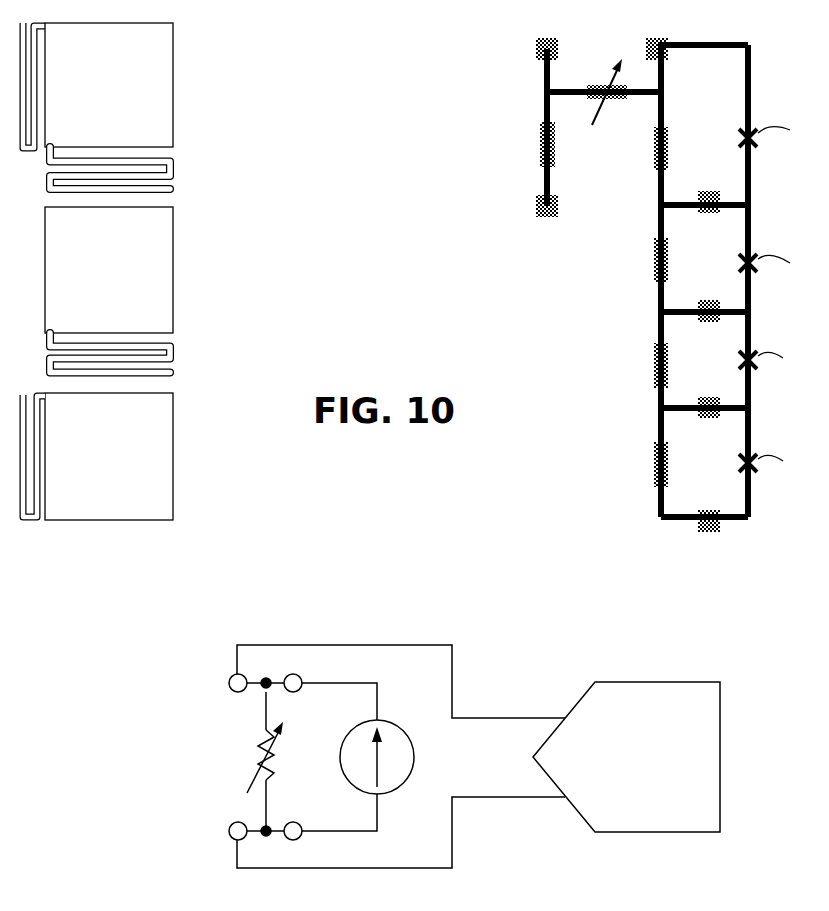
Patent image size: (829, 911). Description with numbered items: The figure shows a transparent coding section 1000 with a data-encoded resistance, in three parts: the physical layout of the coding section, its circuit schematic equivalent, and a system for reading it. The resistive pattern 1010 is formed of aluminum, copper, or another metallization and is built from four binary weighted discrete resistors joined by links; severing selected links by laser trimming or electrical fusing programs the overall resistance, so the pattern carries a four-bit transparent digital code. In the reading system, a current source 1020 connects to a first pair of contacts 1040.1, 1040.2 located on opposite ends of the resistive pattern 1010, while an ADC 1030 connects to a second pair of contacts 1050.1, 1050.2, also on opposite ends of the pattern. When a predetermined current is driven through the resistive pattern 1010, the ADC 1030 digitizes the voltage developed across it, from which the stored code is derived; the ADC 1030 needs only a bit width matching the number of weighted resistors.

The transparent coding section 1000 is at (413, 455).
The resistive pattern 1010 is at (190, 74).
The current source 1020 is at (415, 757).
The ADC 1030 is at (626, 757).
The contact 1040.1 is at (293, 841).
The contact 1040.2 is at (293, 673).
The contact 1050.1 is at (229, 683).
The contact 1050.2 is at (229, 831).